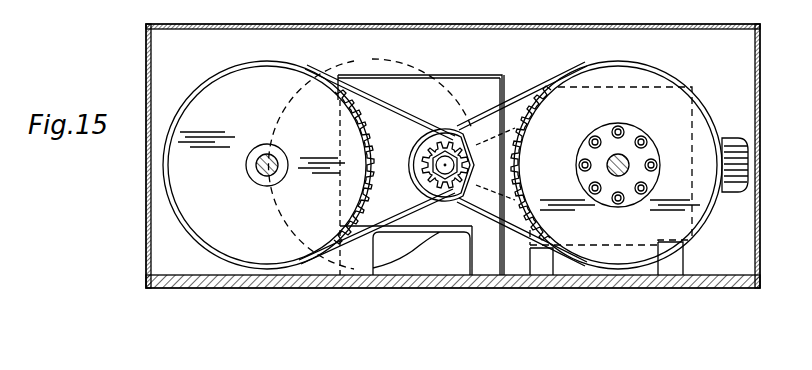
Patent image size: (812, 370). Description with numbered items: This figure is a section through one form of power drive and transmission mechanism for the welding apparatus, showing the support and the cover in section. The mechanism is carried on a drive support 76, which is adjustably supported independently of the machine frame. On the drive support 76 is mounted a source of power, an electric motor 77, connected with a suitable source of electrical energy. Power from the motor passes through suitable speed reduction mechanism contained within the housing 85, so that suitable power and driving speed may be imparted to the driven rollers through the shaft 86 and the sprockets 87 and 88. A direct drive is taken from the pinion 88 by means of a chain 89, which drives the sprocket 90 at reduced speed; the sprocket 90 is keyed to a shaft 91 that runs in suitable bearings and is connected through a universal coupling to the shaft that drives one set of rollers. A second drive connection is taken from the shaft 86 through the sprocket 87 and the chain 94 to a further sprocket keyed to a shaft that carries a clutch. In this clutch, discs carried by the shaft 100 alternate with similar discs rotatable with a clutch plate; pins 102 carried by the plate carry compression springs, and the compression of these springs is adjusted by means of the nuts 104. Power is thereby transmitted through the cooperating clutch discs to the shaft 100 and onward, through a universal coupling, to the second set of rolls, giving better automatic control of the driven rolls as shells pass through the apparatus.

The drive support 76 is at (574, 284).
The electric motor 77 is at (740, 146).
The housing 85 is at (378, 87).
The shaft 86 is at (440, 165).
The sprocket 87 is at (458, 120).
The sprocket 88 is at (423, 188).
The chain 89 is at (380, 109).
The sprocket 90 is at (244, 80).
The shaft 91 is at (276, 158).
The chain 94 is at (600, 63).
The shaft 100 is at (632, 163).
The pins 102 is at (618, 126).
The nuts 104 is at (642, 135).